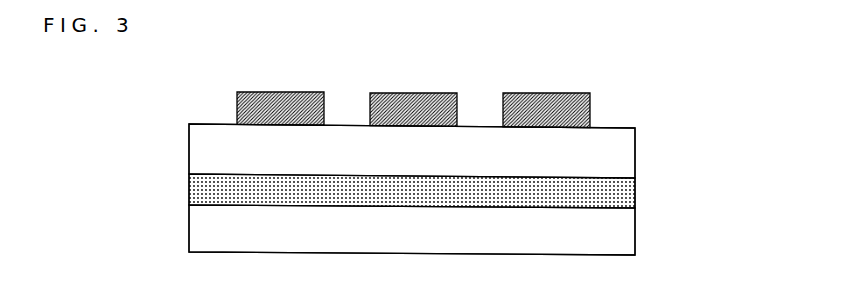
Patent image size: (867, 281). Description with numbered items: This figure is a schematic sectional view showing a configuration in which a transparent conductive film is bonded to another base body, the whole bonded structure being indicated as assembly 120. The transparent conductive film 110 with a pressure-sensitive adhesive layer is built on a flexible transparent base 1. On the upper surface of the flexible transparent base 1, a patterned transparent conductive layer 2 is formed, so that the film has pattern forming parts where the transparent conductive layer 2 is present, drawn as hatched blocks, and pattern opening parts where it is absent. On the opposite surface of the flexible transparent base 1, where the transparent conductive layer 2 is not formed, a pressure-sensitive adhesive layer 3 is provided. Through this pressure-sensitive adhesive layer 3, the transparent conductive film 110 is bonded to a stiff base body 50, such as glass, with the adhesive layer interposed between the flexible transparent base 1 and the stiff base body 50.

The semiconductor device 120 is at (187, 110).
The transparent conductive film with a pressure-sensitive adhesive layer 110 is at (700, 103).
The flexible transparent base 1 is at (622, 149).
The transparent conductive layer 2 is at (590, 104).
The pressure-sensitive adhesive layer 3 is at (622, 189).
The stiff base body 50 is at (622, 227).